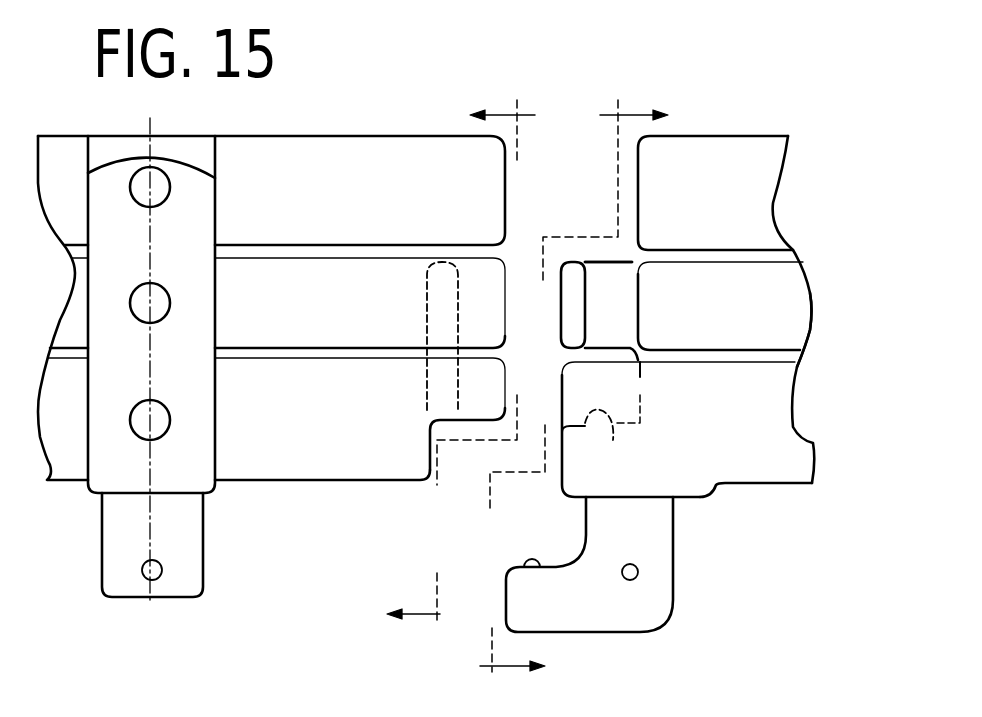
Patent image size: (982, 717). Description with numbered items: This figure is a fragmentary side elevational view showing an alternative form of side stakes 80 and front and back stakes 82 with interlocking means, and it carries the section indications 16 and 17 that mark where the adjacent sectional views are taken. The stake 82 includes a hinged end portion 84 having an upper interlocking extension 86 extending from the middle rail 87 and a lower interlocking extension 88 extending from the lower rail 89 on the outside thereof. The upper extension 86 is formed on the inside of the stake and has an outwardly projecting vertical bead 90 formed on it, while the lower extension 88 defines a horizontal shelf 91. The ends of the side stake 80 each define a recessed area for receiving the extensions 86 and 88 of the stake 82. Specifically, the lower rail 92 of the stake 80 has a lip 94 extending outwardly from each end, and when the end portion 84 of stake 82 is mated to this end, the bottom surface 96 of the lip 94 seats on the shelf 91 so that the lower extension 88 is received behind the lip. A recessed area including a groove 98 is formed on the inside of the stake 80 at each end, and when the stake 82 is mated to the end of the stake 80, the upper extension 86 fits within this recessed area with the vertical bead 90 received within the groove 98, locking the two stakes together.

The section line 16- 16 is at (467, 363).
The section line 17- 17 is at (563, 388).
The side stake 80 is at (62, 326).
The front and back stake 82 is at (710, 137).
The hinged end portion 84 is at (790, 303).
The upper interlocking extension 86 is at (598, 272).
The middle rail 87 is at (673, 314).
The lower interlocking extension 88 is at (583, 462).
The lower rail 89 is at (688, 431).
The vertical bead 90 is at (566, 300).
The horizontal shelf 91 is at (613, 440).
The lower rail 92 is at (290, 443).
The lip 94 is at (443, 382).
The bottom surface 96 is at (478, 420).
The groove 98 is at (435, 303).